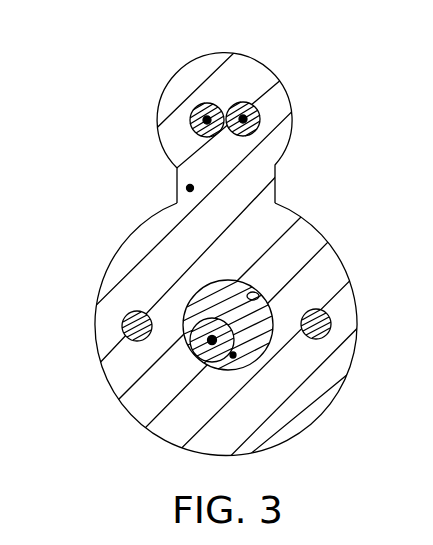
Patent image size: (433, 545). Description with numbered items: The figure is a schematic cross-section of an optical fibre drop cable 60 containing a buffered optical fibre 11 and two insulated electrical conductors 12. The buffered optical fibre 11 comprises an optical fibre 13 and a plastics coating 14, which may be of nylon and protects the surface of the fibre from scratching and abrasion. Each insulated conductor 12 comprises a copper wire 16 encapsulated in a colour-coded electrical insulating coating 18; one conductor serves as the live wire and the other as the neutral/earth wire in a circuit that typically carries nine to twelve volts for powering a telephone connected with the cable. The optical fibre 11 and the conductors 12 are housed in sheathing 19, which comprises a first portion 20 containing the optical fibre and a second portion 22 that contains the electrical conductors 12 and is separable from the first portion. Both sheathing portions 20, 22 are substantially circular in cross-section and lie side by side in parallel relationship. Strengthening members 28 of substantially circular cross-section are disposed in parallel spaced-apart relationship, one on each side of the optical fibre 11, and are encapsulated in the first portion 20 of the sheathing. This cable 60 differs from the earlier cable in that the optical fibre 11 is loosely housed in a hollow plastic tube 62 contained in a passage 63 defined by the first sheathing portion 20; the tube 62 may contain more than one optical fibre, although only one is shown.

The optical fibre drop cable 60 is at (115, 144).
The second portion 22 is at (254, 74).
The sheathing 19 is at (118, 405).
The first portion 20 is at (323, 394).
The electrical insulating coating 18 is at (263, 131).
The insulated electrical conductor 12 is at (188, 106).
The copper wire 16 is at (236, 103).
The strengthening member 28 is at (125, 321).
The passage 63 is at (190, 291).
The plastics coating 14 is at (200, 352).
The optical fibre 13 is at (210, 341).
The buffered optical fibre 11 is at (262, 366).
The hollow plastic tube 62 is at (262, 298).